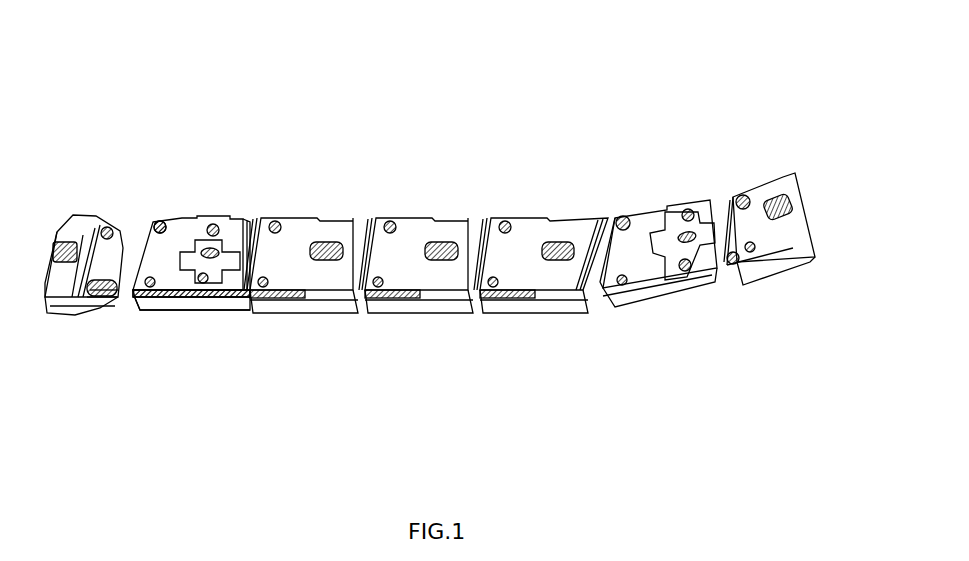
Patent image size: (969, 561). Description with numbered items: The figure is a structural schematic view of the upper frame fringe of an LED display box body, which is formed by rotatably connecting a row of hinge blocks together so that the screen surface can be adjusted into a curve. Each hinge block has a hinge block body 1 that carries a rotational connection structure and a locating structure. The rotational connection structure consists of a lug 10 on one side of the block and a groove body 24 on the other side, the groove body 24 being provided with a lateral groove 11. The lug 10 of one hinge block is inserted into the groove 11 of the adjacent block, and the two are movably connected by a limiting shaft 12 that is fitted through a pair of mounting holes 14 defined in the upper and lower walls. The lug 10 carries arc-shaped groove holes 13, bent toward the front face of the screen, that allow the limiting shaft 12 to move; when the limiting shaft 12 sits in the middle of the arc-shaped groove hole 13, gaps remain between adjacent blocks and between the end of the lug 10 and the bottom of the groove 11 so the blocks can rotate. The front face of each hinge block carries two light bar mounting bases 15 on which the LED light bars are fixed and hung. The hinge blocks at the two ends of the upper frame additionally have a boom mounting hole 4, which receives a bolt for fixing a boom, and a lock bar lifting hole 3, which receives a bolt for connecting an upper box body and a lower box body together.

The hinge block body 1 is at (338, 213).
The lock bar lifting hole 3 is at (676, 213).
The boom mounting hole 4 is at (692, 282).
The lug 10 is at (98, 215).
The groove 11 is at (165, 305).
The limiting shaft 12 is at (400, 217).
The arc-shaped groove hole 13 is at (100, 290).
The mounting hole 14 is at (157, 222).
The light bar mounting base 15 is at (368, 217).
The groove body 24 is at (203, 302).